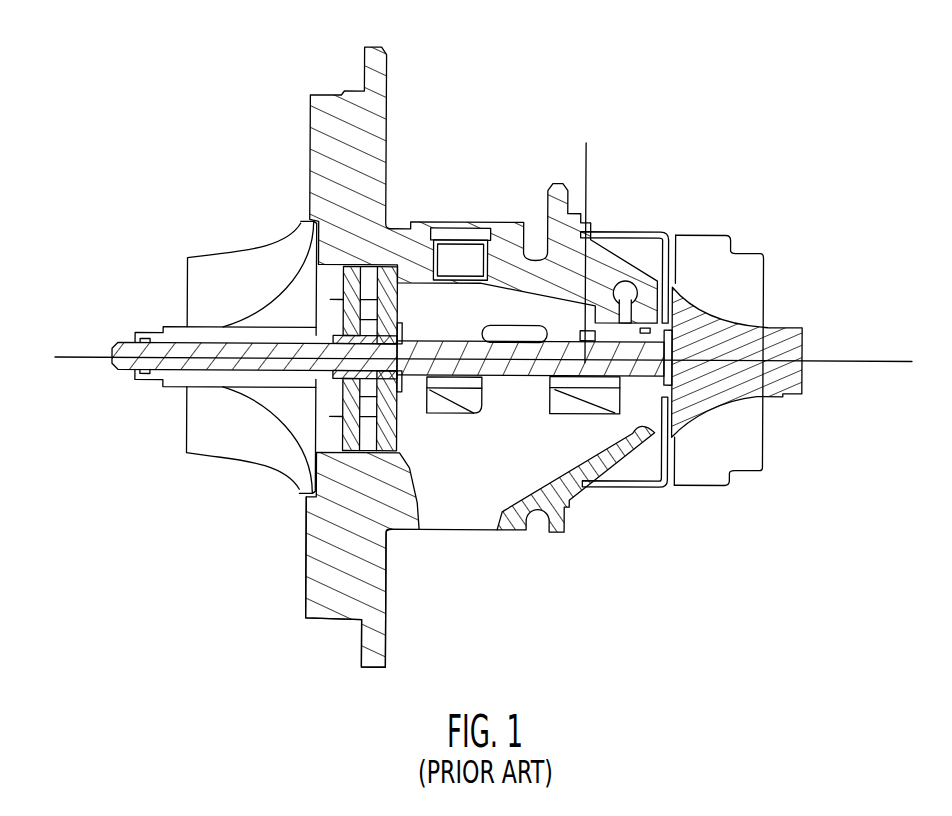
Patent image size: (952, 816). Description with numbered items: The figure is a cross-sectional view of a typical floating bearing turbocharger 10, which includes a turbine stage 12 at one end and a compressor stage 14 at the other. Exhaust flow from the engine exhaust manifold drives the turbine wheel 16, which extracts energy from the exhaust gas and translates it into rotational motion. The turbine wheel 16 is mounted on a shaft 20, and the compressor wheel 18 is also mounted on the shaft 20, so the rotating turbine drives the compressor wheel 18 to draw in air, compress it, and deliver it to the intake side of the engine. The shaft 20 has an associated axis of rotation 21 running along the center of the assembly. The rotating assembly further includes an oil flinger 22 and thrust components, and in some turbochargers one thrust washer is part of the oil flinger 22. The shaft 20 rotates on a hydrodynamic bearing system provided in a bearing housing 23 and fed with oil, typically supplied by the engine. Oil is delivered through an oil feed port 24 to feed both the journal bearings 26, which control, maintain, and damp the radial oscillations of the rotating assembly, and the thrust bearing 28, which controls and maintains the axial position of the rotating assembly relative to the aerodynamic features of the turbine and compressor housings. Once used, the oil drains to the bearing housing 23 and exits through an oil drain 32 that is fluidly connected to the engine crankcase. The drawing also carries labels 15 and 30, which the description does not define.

The floating bearing turbocharger 10 is at (180, 135).
The turbine stage 12 is at (850, 213).
The compressor stage 14 is at (115, 237).
The turbine wheel 15 is at (750, 331).
The turbine wheel 16 is at (418, 341).
The compressor wheel 18 is at (303, 330).
The shaft 20 is at (193, 370).
The axis of rotation 21 is at (66, 357).
The oil flinger 22 is at (332, 384).
The bearing housing 23 is at (345, 148).
The oil feed port 24 is at (455, 257).
The journal bearings 26 is at (463, 380).
The thrust bearing 28 is at (383, 425).
The bearing 30 is at (385, 395).
The oil drain 32 is at (472, 530).